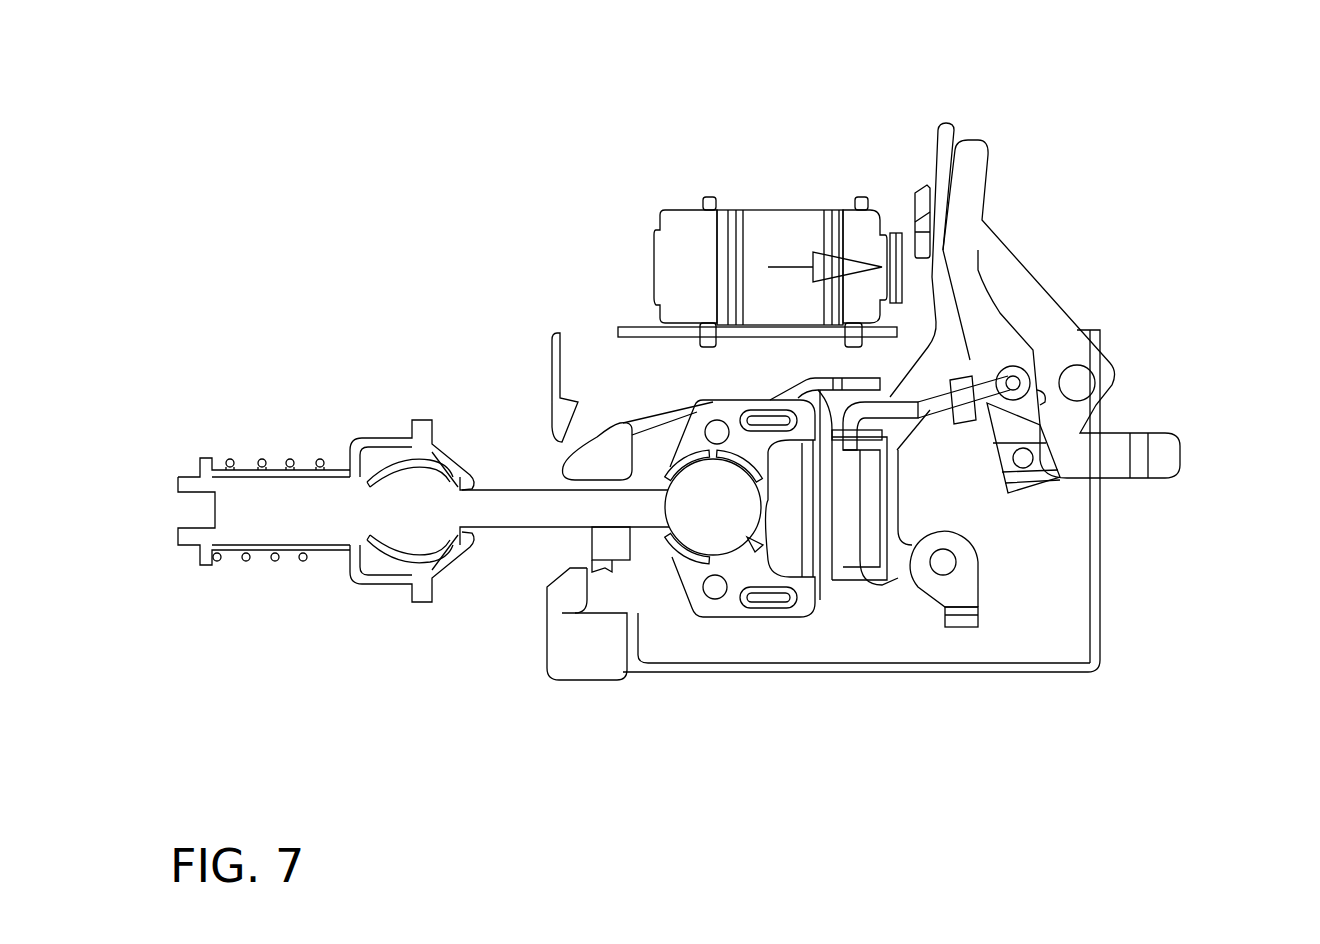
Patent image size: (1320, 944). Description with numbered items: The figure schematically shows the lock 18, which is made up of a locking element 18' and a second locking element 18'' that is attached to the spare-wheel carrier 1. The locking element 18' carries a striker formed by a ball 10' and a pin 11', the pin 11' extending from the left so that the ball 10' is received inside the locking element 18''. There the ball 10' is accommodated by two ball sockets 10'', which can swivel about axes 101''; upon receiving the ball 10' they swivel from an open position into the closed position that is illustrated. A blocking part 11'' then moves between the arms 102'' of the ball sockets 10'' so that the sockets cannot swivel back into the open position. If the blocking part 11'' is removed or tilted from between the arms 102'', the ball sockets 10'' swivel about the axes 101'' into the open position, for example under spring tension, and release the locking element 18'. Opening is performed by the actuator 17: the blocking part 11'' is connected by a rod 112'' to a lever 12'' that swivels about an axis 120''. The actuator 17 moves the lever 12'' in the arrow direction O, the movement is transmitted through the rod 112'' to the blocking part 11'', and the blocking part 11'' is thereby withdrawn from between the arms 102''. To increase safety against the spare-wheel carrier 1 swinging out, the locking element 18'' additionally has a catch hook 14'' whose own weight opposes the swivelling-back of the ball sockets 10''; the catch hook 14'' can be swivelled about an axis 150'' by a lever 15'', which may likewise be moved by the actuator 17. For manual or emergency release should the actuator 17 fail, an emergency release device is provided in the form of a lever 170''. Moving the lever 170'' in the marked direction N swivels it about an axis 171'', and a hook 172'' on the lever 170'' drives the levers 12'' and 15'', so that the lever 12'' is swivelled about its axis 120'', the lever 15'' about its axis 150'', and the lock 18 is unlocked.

The spare-wheel carrier 1 is at (553, 382).
The ball 10' is at (684, 625).
The ball sockets 10'' is at (754, 596).
The axes 101'' is at (712, 568).
The arms 102'' is at (745, 345).
The pin 11' is at (423, 625).
The blocking part 11'' is at (850, 591).
The lever 12'' is at (1103, 553).
The axis 120'' is at (1090, 620).
The catch hook 14'' is at (633, 367).
The lever 15'' is at (917, 593).
The axis 150'' is at (984, 661).
The actuator 17 is at (688, 217).
The lever 170'' is at (1105, 300).
The axis 171'' is at (1145, 353).
The hook 172'' is at (885, 177).
The rod 112'' is at (962, 551).
The lock 18 is at (748, 359).
The locking element 18' is at (381, 408).
The locking element 18'' is at (1235, 176).
The arrow direction O is at (793, 267).
The direction N is at (1253, 442).